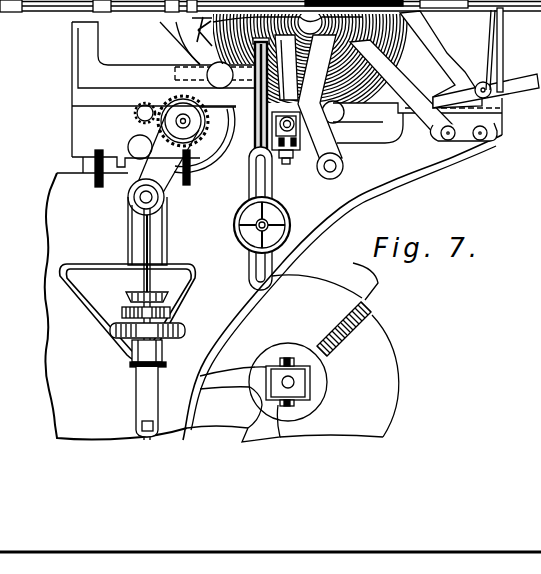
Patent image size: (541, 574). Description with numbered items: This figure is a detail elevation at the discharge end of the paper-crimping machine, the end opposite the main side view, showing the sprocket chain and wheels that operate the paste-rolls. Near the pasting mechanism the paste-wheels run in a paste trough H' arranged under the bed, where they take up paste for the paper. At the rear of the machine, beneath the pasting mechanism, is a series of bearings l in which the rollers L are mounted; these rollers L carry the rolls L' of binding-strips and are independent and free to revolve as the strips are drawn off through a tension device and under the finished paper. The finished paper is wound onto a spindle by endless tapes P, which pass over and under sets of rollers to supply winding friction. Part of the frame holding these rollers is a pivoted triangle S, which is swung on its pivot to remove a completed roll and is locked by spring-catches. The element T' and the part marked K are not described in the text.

The shaft T' is at (198, 75).
The paste trough H' is at (154, 136).
The blade K is at (186, 41).
The triangle S is at (436, 47).
The tapes P is at (508, 50).
The rollers L is at (335, 356).
The rolls of binding-strips L' is at (342, 273).
The bearings l is at (226, 372).